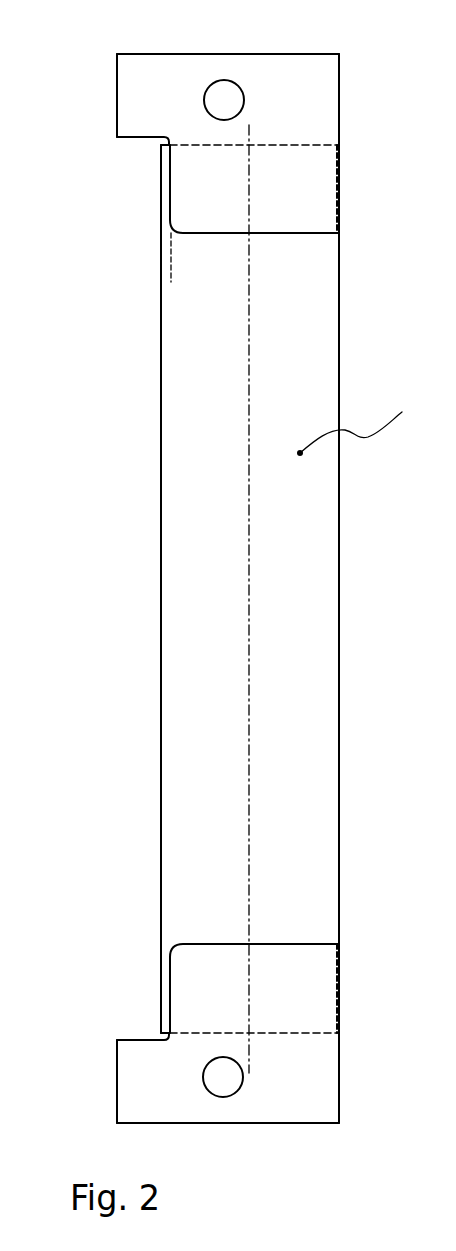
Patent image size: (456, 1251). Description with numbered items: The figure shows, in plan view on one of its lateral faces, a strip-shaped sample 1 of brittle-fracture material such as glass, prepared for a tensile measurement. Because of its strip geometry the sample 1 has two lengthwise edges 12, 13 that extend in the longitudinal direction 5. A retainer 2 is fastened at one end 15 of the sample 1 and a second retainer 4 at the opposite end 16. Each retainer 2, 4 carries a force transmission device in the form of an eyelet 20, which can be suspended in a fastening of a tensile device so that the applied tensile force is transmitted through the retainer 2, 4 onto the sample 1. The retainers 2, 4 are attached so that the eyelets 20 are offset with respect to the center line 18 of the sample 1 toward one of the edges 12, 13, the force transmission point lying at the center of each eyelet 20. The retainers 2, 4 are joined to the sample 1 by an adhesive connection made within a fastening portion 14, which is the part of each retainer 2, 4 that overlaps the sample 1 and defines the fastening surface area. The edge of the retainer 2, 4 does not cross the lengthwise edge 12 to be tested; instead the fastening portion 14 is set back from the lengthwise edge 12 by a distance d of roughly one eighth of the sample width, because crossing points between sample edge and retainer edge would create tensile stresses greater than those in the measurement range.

The strip-shaped sample 1 is at (135, 526).
The retainer 2 is at (117, 100).
The retainer 4 is at (117, 1063).
The longitudinal direction 5 is at (372, 615).
The lengthwise edge 12 is at (161, 428).
The lengthwise edge 13 is at (337, 325).
The fastening portion 14 is at (200, 187).
The end of the sample 15 is at (356, 152).
The end of the sample 16 is at (350, 1008).
The center line 18 is at (249, 548).
The eyelet 20 is at (206, 95).
The distance d is at (122, 268).